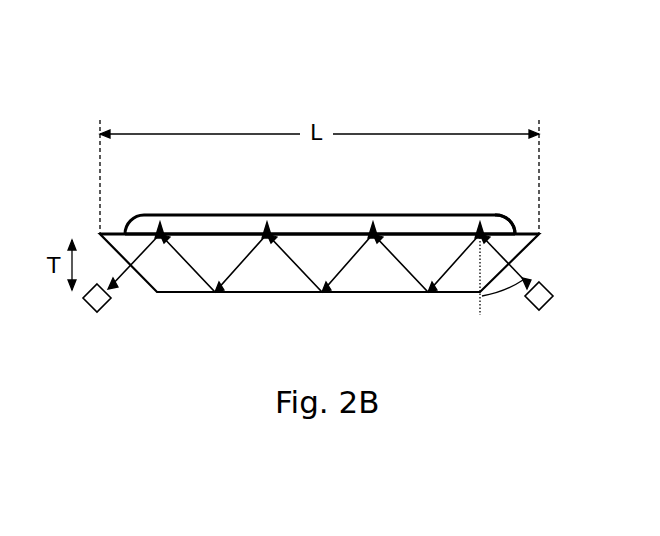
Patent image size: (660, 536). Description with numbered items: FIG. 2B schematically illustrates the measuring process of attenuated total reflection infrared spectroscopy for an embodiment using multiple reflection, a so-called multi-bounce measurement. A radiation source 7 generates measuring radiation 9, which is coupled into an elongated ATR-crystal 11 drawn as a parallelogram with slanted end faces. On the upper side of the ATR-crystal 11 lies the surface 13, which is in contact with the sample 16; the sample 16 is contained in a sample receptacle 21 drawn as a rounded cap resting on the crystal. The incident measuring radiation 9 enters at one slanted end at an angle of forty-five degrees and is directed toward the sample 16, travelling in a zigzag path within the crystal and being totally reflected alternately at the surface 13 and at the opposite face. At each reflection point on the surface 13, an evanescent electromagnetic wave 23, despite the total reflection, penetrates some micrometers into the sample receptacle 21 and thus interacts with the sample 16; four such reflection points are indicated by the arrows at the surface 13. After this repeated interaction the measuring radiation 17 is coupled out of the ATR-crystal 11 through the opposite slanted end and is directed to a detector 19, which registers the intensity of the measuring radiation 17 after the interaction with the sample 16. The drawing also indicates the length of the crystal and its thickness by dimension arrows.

The radiation source 7 is at (548, 288).
The measuring radiation 9 is at (522, 280).
The ATR-crystal 11 is at (515, 252).
The surface 13 is at (352, 232).
The sample 16 is at (438, 227).
The measuring radiation after interaction 17 is at (110, 293).
The detector 19 is at (104, 310).
The sample receptacle 21 is at (525, 215).
The evanescent electromagnetic wave 23 is at (160, 222).